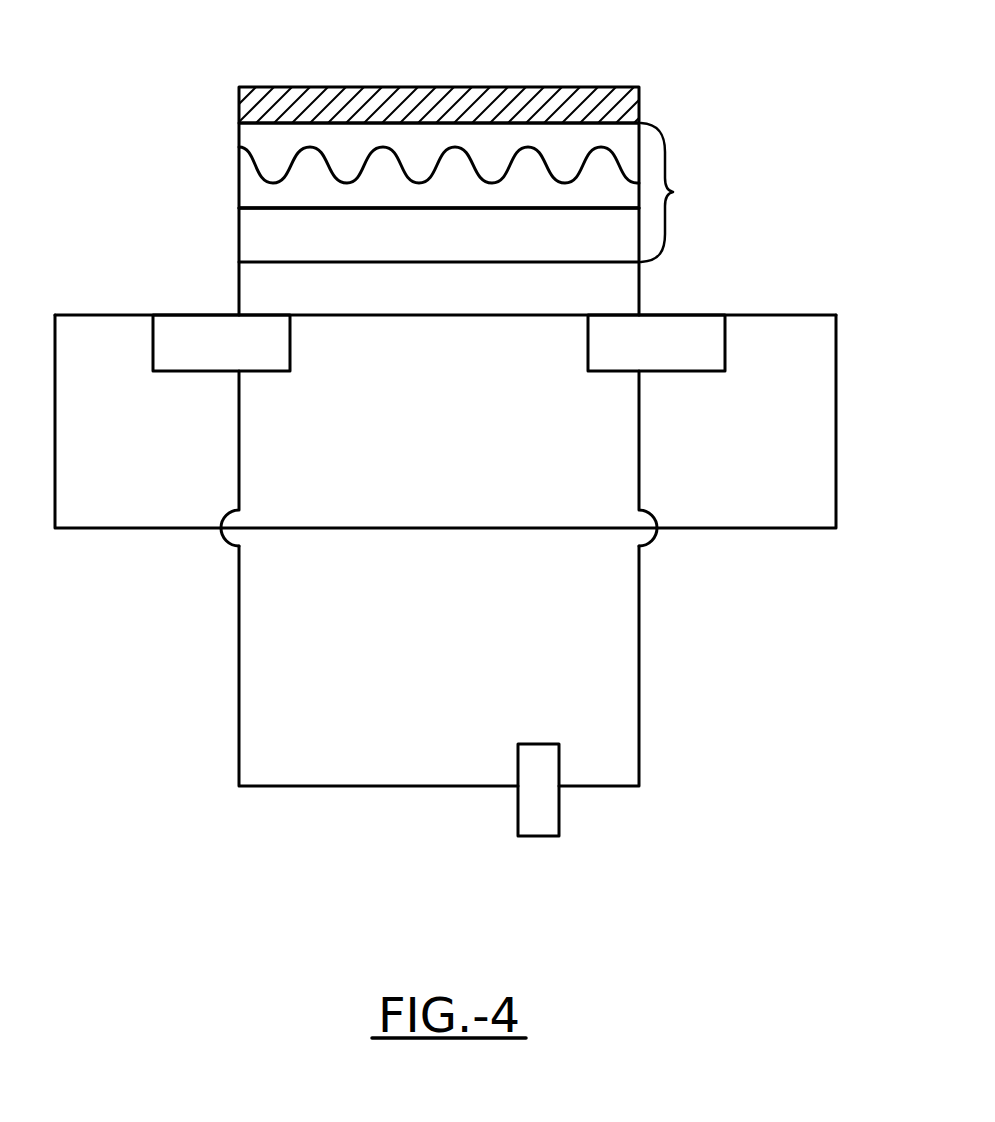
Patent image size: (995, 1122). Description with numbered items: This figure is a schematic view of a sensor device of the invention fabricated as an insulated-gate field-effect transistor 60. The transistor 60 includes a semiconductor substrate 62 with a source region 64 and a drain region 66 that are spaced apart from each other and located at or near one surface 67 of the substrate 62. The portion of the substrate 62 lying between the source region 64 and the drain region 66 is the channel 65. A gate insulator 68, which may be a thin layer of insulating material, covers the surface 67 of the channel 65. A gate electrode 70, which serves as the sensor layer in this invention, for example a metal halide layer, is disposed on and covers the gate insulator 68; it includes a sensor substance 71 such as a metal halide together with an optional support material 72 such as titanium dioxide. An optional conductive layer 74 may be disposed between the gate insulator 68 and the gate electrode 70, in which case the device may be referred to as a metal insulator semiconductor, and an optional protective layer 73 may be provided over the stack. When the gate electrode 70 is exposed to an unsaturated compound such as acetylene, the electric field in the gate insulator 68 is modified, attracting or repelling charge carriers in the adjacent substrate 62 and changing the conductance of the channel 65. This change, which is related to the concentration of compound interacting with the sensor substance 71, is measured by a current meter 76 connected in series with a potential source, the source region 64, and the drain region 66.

The transistor 60 is at (758, 190).
The semiconductor substrate 62 is at (437, 515).
The source region 64 is at (172, 353).
The channel 65 is at (441, 398).
The drain region 66 is at (683, 358).
The surface 67 is at (435, 315).
The gate insulator 68 is at (239, 290).
The gate electrode 70 is at (673, 192).
The sensor substance 71 is at (245, 135).
The support material 72 is at (240, 183).
The protective layer 73 is at (623, 87).
The conductive layer 74 is at (243, 233).
The current meter 76 is at (553, 803).